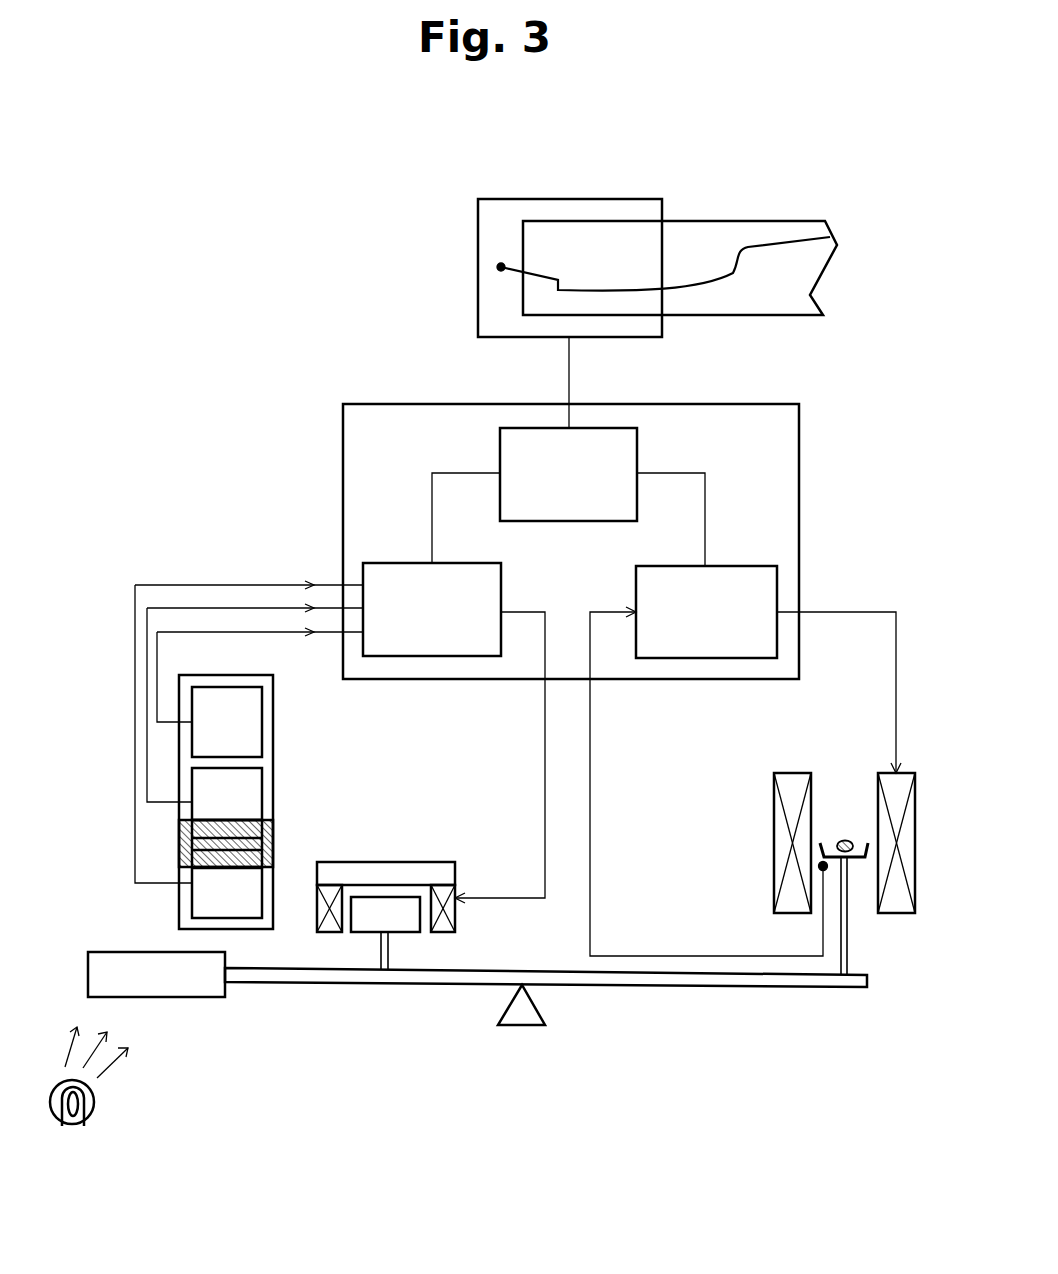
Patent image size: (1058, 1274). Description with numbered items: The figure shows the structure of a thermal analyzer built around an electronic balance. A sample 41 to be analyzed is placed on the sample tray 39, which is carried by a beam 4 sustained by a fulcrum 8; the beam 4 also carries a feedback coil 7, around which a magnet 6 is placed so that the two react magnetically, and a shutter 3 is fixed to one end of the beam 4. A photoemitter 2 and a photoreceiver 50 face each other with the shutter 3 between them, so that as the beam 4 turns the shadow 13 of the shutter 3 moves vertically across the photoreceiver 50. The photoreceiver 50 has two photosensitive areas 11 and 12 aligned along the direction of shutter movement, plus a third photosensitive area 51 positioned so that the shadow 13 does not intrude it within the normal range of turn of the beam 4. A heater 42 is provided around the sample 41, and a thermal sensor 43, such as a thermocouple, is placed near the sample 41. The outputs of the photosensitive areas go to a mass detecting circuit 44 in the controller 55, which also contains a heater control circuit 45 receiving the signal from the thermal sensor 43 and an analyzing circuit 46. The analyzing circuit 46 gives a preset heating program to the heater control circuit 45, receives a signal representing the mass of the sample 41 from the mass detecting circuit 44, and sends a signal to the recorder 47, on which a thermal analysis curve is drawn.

The photoemitter 2 is at (95, 1103).
The shutter 3 is at (195, 997).
The beam 4 is at (672, 983).
The magnet 6 is at (368, 922).
The feedback coil 7 is at (454, 893).
The fulcrum 8 is at (522, 1020).
The photosensitive area 11 is at (200, 782).
The photosensitive area 12 is at (200, 898).
The shadow 13 is at (273, 842).
The sample tray 39 is at (857, 862).
The sample 41 is at (842, 840).
The heater 42 is at (777, 800).
The thermal sensor 43 is at (823, 866).
The mass detecting circuit 44 is at (399, 563).
The heater control circuit 45 is at (737, 566).
The analyzing circuit 46 is at (502, 438).
The recorder 47 is at (478, 268).
The photoreceiver 50 is at (234, 675).
The third photosensitive area 51 is at (192, 705).
The controller 55 is at (343, 423).